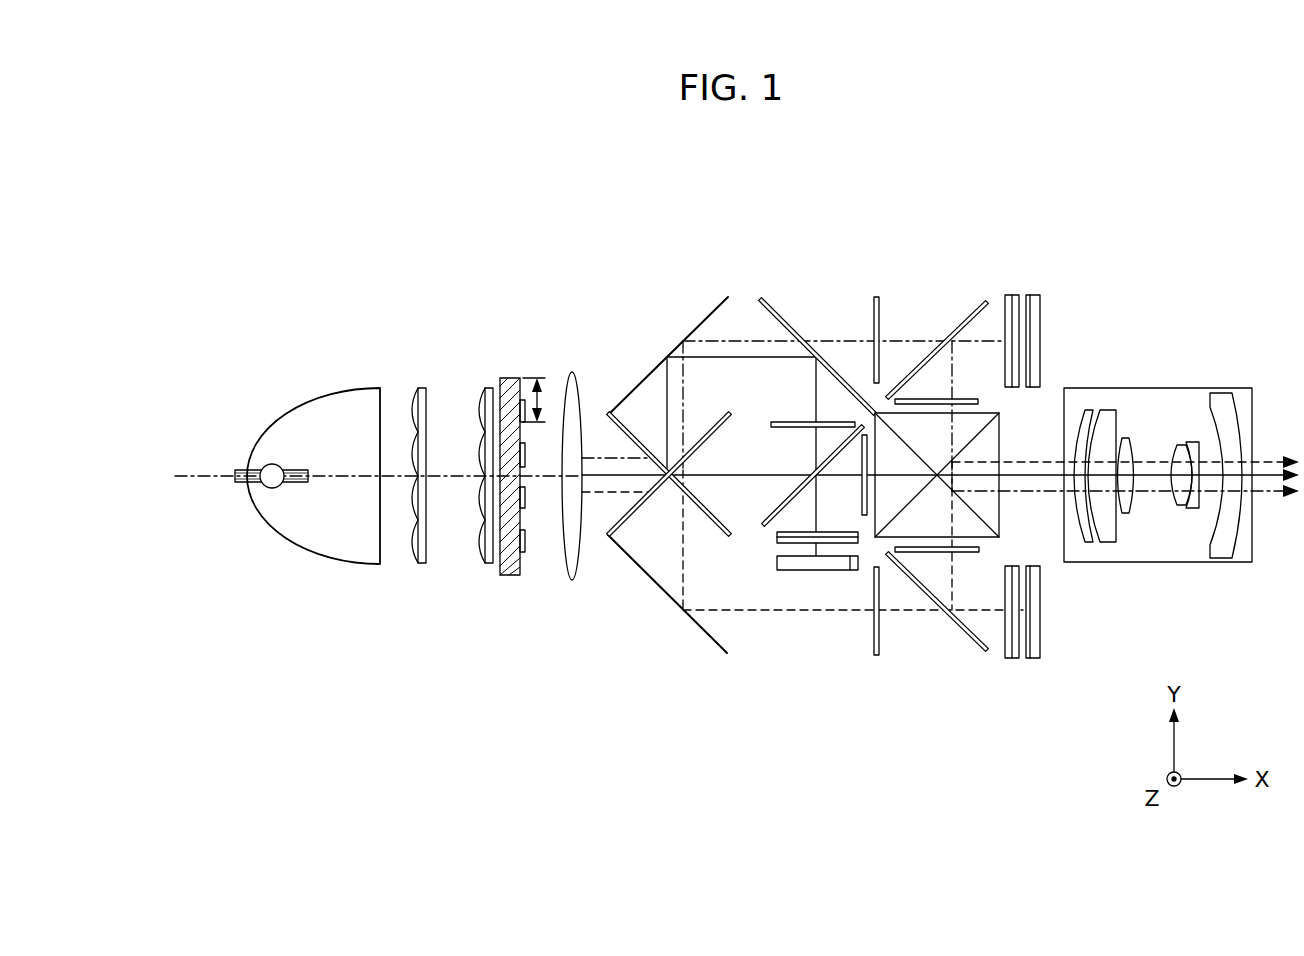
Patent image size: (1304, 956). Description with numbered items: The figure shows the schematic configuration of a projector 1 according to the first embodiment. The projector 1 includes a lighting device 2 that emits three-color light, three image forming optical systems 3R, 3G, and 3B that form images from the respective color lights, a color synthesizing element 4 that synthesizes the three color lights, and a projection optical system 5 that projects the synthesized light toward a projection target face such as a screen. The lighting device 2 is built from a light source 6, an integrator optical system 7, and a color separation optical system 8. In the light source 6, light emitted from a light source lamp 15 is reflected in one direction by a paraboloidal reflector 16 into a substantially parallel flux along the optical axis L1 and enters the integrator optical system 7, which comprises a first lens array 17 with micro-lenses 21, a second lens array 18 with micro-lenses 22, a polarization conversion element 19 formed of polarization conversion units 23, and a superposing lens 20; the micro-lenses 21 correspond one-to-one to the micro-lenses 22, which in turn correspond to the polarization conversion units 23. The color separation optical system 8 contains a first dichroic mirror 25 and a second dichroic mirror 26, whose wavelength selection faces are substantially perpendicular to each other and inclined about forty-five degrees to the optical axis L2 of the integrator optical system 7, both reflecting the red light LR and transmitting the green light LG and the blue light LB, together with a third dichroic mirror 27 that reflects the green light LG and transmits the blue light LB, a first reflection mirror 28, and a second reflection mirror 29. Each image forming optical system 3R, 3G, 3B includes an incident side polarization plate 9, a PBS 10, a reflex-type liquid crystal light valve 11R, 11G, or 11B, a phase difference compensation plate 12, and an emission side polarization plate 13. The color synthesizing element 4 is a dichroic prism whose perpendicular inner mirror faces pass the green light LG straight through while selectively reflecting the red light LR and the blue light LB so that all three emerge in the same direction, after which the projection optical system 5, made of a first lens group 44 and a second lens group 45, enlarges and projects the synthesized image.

The projector 1 is at (808, 205).
The lighting device 2 is at (598, 290).
The image forming optical system 3B is at (928, 290).
The image forming optical system 3G is at (817, 590).
The image forming optical system 3R is at (926, 660).
The color synthesizing element 4 is at (1000, 437).
The projection optical system 5 is at (1222, 600).
The light source 6 is at (310, 395).
The integrator optical system 7 is at (388, 634).
The color separation optical system 8 is at (644, 610).
The incident side polarization plate 9 is at (876, 296).
The PBS 10 is at (960, 323).
The reflex-type liquid crystal light valve 11B is at (1034, 295).
The reflex-type liquid crystal light valve 11G is at (776, 562).
The reflex-type liquid crystal light valve 11R is at (1032, 660).
The phase difference compensation plate 12 is at (1012, 295).
The emission side polarization plate 13 is at (925, 398).
The light source lamp 15 is at (272, 490).
The paraboloidal reflector 16 is at (317, 532).
The first lens array 17 is at (415, 556).
The second lens array 18 is at (482, 556).
The polarization conversion element 19 is at (508, 575).
The superposing lens 20 is at (570, 575).
The micro-lens 21 is at (414, 396).
The micro-lens 22 is at (481, 396).
The polarization conversion unit 23 is at (541, 372).
The first dichroic mirror 25 is at (706, 512).
The second dichroic mirror 26 is at (706, 444).
The third dichroic mirror 27 is at (782, 316).
The first reflection mirror 28 is at (700, 636).
The second reflection mirror 29 is at (705, 316).
The first lens group 44 is at (1133, 565).
The second lens group 45 is at (1242, 565).
The optical axis L1 is at (189, 440).
The optical axis L2 is at (452, 514).
The blue light LB is at (832, 303).
The green light LG is at (727, 380).
The red light LR is at (763, 655).